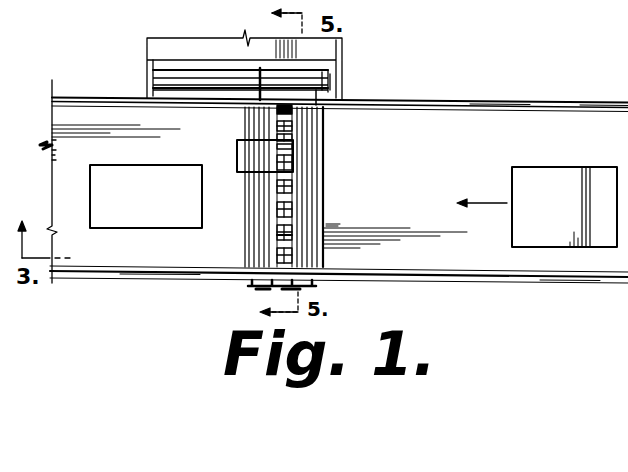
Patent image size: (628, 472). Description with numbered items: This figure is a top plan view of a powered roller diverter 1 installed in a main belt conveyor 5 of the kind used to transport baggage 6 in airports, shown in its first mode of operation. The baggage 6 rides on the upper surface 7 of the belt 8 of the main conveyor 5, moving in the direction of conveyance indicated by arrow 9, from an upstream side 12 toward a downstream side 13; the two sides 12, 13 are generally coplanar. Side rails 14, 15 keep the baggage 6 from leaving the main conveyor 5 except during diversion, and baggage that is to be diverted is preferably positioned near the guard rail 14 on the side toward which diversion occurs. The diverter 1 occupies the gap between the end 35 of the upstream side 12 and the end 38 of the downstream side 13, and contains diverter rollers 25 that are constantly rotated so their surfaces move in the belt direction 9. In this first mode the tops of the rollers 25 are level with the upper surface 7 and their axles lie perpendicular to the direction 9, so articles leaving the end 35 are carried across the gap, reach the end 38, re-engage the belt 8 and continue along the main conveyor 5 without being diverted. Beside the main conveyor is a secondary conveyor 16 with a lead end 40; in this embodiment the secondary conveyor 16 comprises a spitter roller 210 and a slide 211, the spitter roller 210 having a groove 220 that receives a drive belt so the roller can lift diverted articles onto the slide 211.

The powered roller diverter 1 is at (294, 216).
The main belt conveyor 5 is at (421, 100).
The baggage 6 is at (120, 223).
The upper surface 7 is at (401, 166).
The belt 8 is at (499, 107).
The arrow 9 is at (484, 202).
The upstream side 12 is at (425, 256).
The downstream side 13 is at (163, 258).
The side rail 14 is at (614, 101).
The side rail 15 is at (567, 276).
The secondary conveyor 16 is at (327, 80).
The diverter roller 25 is at (292, 252).
The end of upstream side 35 is at (291, 186).
The end of downstream side 38 is at (275, 240).
The lead end 40 is at (318, 93).
The spitter roller 210 is at (162, 79).
The slide 211 is at (160, 48).
The groove 220 is at (258, 76).